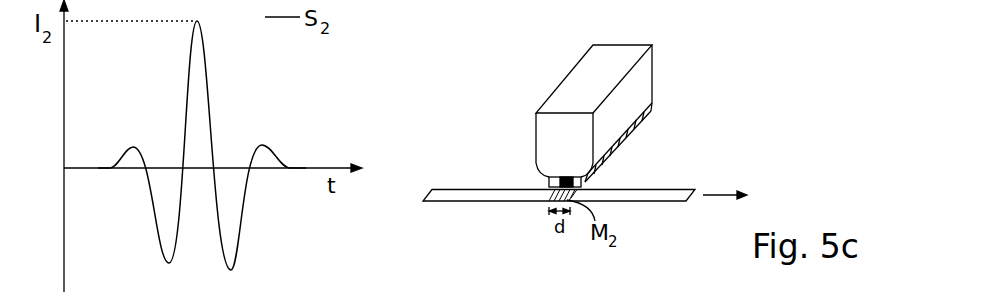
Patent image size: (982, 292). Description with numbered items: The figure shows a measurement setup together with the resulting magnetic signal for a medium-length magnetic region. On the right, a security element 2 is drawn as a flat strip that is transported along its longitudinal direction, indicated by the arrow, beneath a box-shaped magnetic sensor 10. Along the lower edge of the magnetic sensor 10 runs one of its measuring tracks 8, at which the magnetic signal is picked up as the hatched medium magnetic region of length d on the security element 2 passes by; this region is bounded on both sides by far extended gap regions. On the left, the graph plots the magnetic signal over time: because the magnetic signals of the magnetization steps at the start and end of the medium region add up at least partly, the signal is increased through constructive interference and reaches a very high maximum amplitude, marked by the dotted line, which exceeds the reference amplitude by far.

The magnetic sensor 10 is at (560, 97).
The measuring track 8 is at (638, 114).
The security element 2 is at (559, 183).